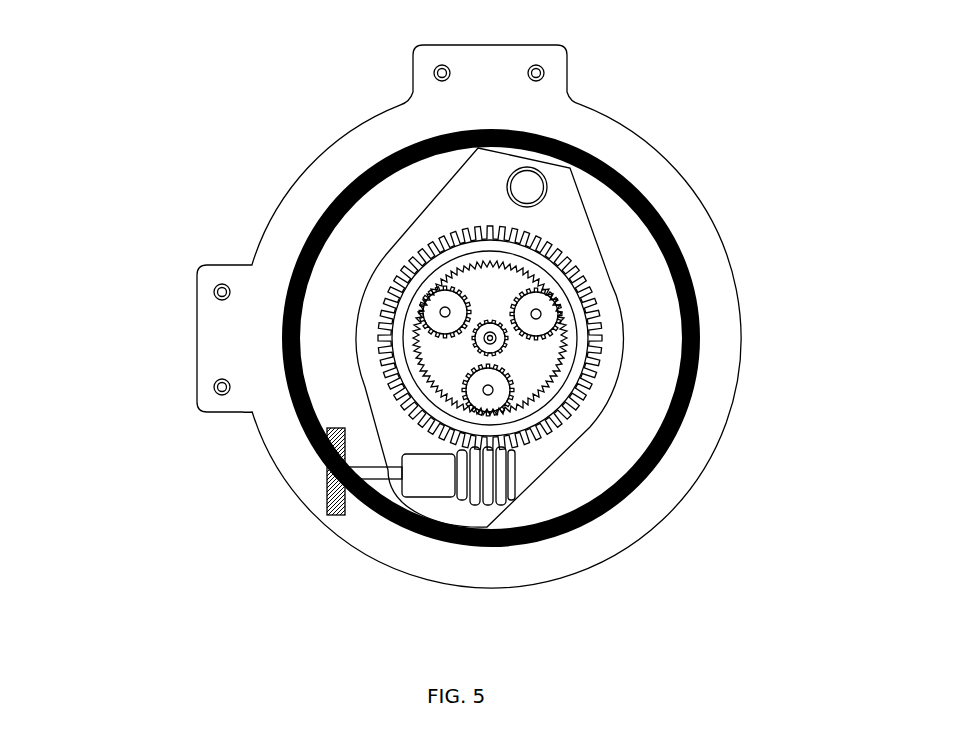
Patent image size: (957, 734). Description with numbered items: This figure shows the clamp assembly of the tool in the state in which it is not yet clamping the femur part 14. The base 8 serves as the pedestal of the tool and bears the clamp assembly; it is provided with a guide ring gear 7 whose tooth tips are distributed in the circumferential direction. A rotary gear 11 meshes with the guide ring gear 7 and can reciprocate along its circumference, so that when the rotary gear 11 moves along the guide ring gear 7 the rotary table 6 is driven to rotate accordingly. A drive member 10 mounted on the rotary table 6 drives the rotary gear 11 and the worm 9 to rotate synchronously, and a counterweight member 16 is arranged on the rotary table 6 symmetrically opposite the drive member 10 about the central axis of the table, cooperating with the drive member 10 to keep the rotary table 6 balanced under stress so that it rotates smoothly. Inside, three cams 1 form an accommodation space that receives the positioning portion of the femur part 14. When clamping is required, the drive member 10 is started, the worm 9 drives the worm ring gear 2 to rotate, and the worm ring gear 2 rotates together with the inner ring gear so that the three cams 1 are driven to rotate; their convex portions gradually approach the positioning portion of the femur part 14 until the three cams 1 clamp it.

The cam 1 is at (548, 320).
The worm ring gear 2 is at (380, 383).
The rotary table 6 is at (353, 333).
The guide ring gear 7 is at (288, 272).
The base 8 is at (285, 190).
The worm 9 is at (497, 513).
The drive member 10 is at (427, 498).
The rotary gear 11 is at (317, 502).
The femur part 14 is at (507, 352).
The counterweight member 16 is at (549, 178).